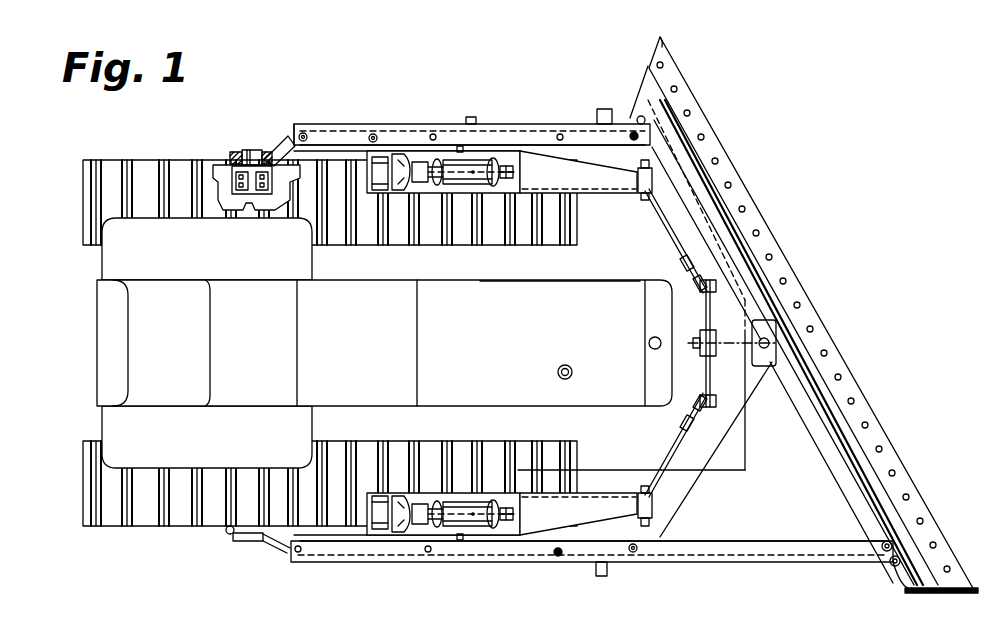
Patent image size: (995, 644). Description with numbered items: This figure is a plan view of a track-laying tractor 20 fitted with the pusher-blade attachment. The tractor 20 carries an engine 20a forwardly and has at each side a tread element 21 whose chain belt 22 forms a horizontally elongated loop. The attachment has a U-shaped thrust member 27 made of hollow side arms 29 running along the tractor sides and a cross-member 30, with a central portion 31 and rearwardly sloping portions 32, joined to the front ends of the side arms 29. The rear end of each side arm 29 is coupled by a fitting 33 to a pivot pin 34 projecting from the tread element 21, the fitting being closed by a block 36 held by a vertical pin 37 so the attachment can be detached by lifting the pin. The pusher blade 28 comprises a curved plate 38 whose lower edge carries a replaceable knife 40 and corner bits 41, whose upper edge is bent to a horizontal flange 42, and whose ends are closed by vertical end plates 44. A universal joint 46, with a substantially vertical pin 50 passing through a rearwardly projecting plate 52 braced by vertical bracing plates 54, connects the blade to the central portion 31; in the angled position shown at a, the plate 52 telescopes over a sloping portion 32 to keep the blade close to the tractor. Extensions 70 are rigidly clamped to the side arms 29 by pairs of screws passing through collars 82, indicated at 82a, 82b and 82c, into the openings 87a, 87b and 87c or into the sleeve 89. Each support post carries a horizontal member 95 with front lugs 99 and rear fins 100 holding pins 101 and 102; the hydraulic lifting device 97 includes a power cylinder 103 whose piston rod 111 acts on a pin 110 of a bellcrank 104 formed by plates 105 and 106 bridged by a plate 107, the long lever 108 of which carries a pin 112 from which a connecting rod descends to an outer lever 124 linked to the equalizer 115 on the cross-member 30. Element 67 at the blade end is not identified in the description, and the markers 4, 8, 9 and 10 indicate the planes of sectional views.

The tractor 20 is at (147, 310).
The engine 20a is at (568, 307).
The tread elements 21 is at (140, 193).
The chain belt 22 is at (180, 175).
The thrust member 27 is at (752, 428).
The pusher blade 28 is at (778, 247).
The side arms 29 is at (396, 126).
The cross-member 30 is at (735, 435).
The central portion 31 is at (746, 380).
The rearwardly sloping portions 32 is at (732, 222).
The fittings 33 is at (280, 146).
The pivots 34 is at (252, 150).
The blocks 36 is at (218, 170).
The vertical pins 37 is at (234, 152).
The curved plate 38 is at (828, 375).
The replaceable knife 40 is at (882, 436).
The replaceable corner bits 41 is at (670, 72).
The horizontal flange 42 is at (698, 165).
The vertical end plates 44 is at (648, 62).
The universal joint 46 is at (740, 358).
The vertical pin 50 is at (764, 360).
The plate 52 is at (672, 163).
The vertical bracing plates 54 is at (762, 324).
The link 67 is at (640, 116).
The extensions 70 is at (524, 138).
The wall or body 82 is at (478, 123).
The collar 82a is at (305, 132).
The collar 82b is at (373, 133).
The collar 82c is at (631, 131).
The opening 87a is at (298, 554).
The opening 87b is at (434, 133).
The opening 87c is at (560, 133).
The sleeve 89 is at (598, 116).
The horizontal portion 95 is at (445, 190).
The hydraulic type lifting device 97 is at (474, 174).
The fins or lugs 99 is at (514, 194).
The fins 100 is at (356, 150).
The front pins 101 is at (500, 194).
The rear pins 102 is at (374, 195).
The power cylinder 103 is at (494, 548).
The bellcrank members 104 is at (460, 146).
The plate 105 is at (424, 194).
The plate 106 is at (490, 150).
The plate 107 is at (593, 182).
The forwardly extending lever 108 is at (548, 198).
The transverse pin 110 is at (401, 194).
The piston rod 111 is at (428, 165).
The transverse pin 112 is at (643, 199).
The equalizer 115 is at (688, 352).
The outer levers 124 is at (676, 237).
The angled position a is at (703, 212).
The section line 4- 4 is at (617, 67).
The section line 8- 8 is at (822, 332).
The section line 9- 9 is at (946, 504).
The section line 10- 10 is at (557, 597).